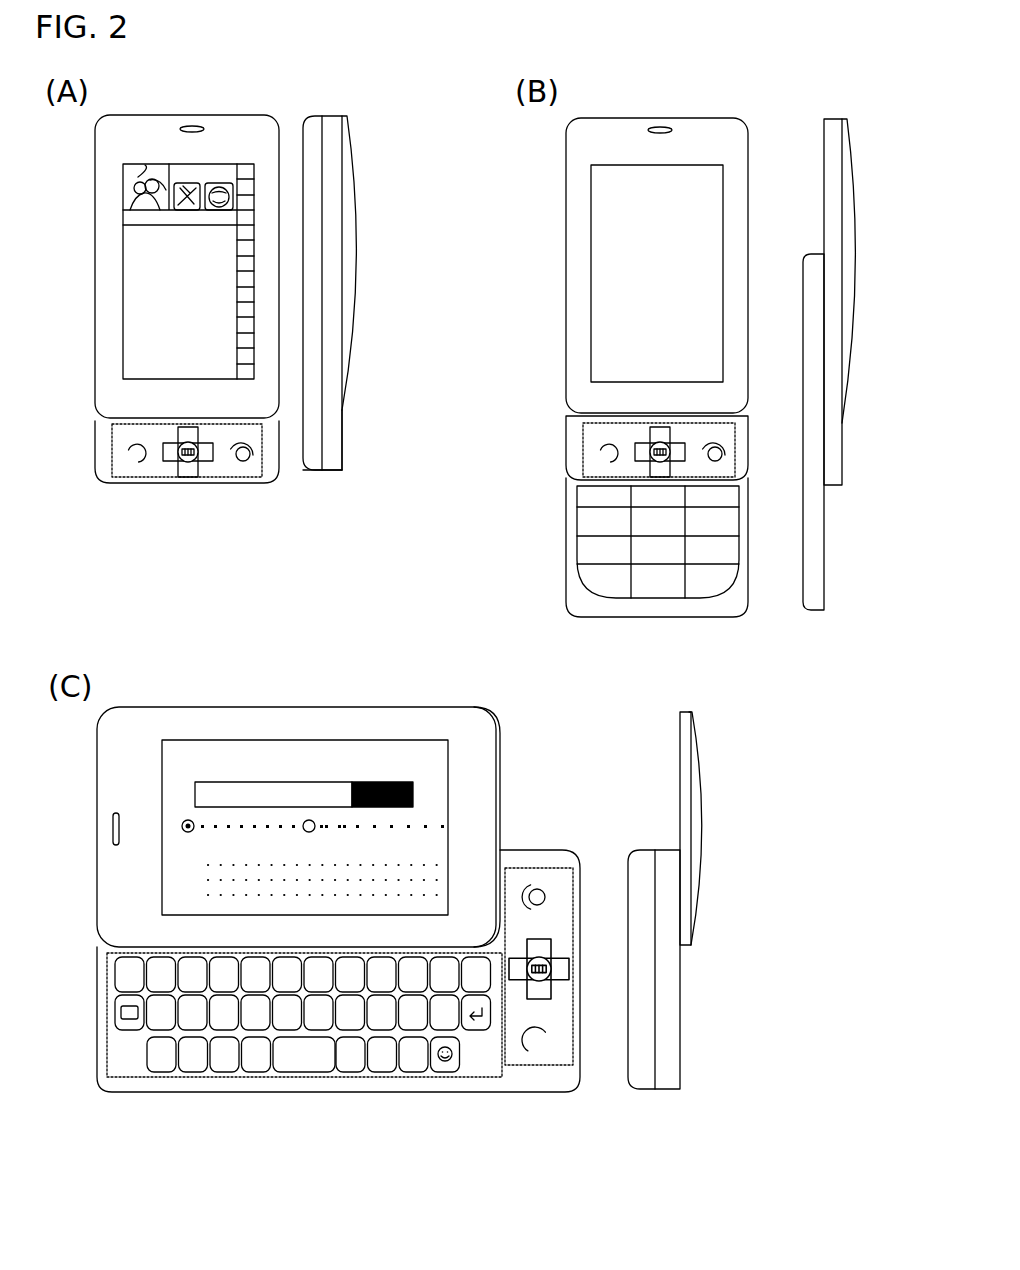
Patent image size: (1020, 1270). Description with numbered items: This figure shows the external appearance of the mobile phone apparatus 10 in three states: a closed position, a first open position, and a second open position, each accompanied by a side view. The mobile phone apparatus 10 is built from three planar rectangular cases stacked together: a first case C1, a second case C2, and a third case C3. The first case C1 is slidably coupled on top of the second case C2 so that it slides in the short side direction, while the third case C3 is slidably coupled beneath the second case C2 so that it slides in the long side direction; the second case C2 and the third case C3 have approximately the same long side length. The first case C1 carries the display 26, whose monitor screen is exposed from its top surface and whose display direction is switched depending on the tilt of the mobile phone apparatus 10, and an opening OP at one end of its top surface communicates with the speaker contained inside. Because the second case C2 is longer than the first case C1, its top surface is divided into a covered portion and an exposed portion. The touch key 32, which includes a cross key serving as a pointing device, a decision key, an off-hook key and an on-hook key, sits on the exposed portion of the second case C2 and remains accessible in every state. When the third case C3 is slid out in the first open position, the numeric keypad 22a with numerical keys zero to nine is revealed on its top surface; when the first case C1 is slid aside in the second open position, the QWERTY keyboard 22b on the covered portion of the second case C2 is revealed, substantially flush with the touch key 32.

The mobile phone apparatus 10 is at (89, 181).
The display 26 is at (123, 258).
The opening OP is at (201, 124).
The first case C1 is at (92, 337).
The second case C2 is at (92, 435).
The third case C3 is at (318, 482).
The touch key 32 is at (165, 478).
The numeric keypad 22a is at (738, 526).
The QWERTY keyboard 22b is at (118, 1077).